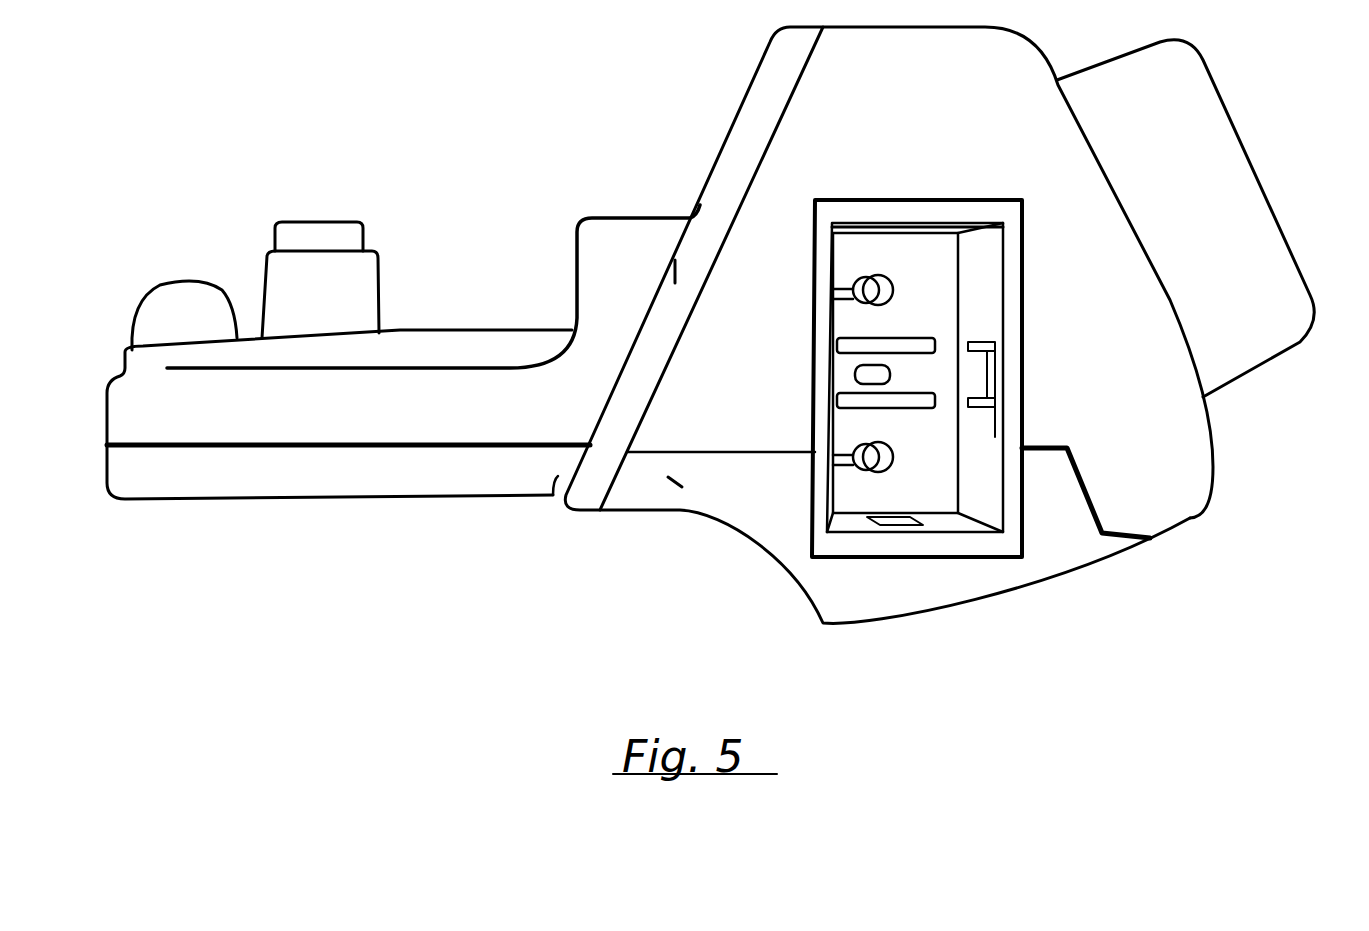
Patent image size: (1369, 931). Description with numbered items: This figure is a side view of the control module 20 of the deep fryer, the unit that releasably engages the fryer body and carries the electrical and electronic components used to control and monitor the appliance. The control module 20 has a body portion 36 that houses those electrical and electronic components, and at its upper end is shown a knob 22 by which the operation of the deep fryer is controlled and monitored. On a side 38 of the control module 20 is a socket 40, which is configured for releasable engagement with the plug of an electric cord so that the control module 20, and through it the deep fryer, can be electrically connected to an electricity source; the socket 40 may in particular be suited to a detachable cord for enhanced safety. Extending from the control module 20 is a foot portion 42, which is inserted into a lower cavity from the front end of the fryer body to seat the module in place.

The control module 20 is at (1170, 503).
The knob 22 is at (1197, 142).
The body portion 36 is at (898, 603).
The side 38 is at (727, 492).
The socket 40 is at (967, 485).
The foot portion 42 is at (327, 482).